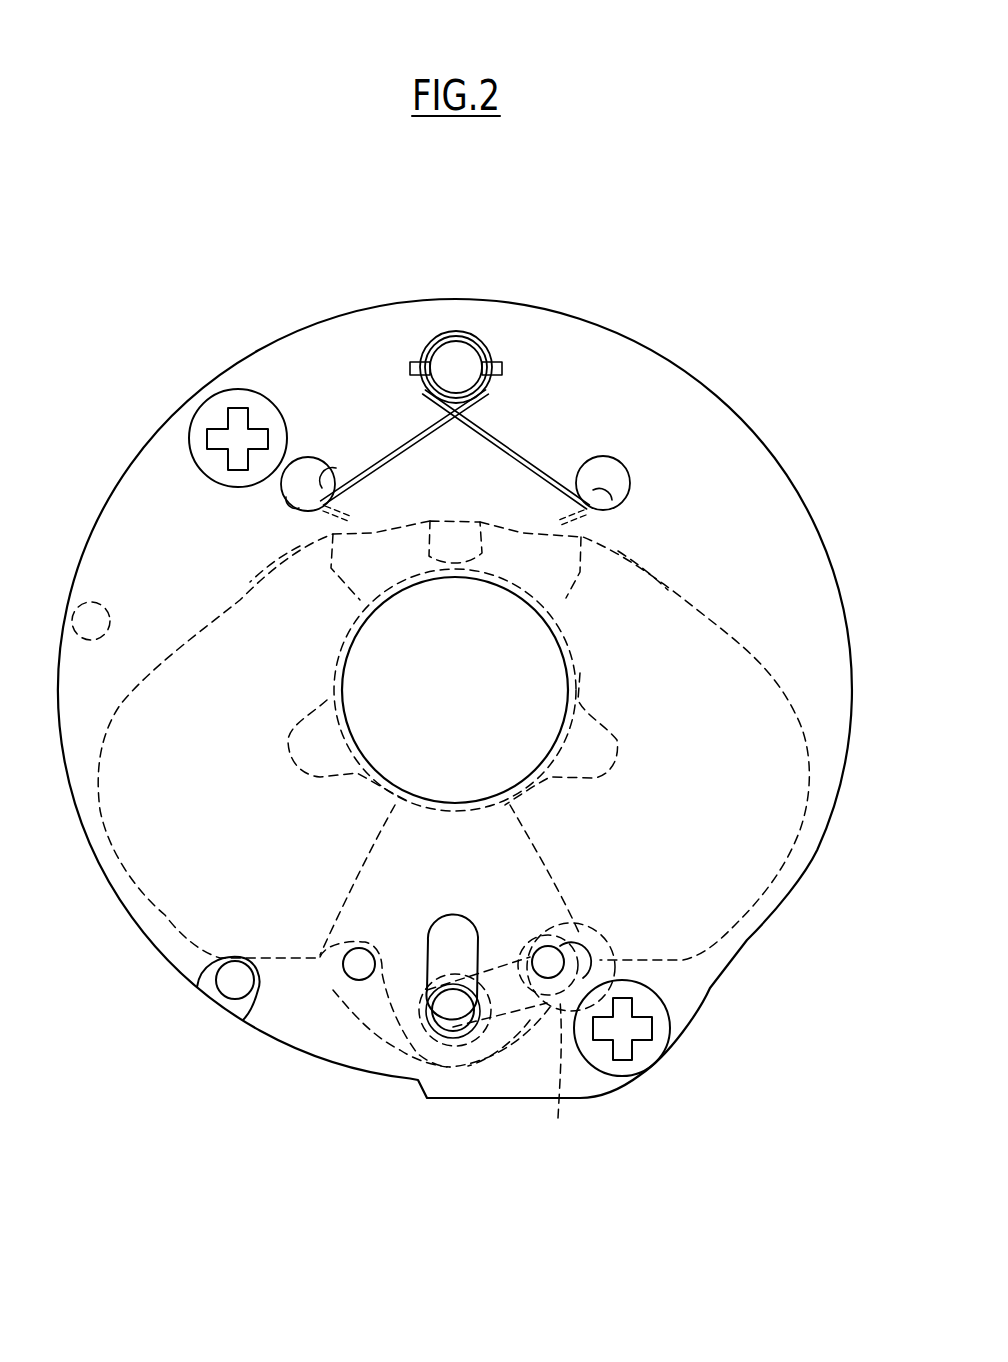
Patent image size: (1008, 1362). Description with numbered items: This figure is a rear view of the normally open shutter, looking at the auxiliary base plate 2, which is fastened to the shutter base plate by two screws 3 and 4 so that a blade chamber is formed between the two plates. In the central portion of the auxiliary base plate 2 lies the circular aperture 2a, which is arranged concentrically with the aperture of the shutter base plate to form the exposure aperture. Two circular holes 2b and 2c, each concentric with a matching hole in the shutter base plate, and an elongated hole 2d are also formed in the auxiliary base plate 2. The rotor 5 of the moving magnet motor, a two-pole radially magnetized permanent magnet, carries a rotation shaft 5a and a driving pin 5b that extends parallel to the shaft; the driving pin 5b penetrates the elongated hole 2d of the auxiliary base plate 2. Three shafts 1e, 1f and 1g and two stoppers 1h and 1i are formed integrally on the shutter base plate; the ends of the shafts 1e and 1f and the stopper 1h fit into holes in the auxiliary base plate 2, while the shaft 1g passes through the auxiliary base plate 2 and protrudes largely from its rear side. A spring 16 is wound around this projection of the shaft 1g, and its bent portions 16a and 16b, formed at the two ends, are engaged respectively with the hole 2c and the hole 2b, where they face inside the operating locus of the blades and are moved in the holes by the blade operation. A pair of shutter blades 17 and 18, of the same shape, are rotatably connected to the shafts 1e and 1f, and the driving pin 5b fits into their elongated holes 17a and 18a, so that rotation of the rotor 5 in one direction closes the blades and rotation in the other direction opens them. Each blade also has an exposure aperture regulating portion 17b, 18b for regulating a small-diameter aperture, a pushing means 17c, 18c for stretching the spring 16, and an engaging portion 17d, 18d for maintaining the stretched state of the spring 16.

The auxiliary base plate 2 is at (607, 345).
The circular aperture 2a is at (552, 648).
The circular hole 2b is at (608, 467).
The circular hole 2c is at (287, 497).
The elongated hole 2d is at (452, 915).
The screw 3 is at (252, 402).
The screw 4 is at (650, 1057).
The rotor 5 is at (600, 947).
The rotation shaft 5a is at (557, 1076).
The driving pin 5b is at (450, 1020).
The spring 16 is at (436, 332).
The bent portion 16a is at (330, 473).
The bent portion 16b is at (628, 500).
The shaft 1e is at (355, 971).
The shaft 1f is at (548, 962).
The shaft 1g is at (463, 351).
The stopper 1h is at (227, 987).
The stopper 1i is at (87, 617).
The shutter blade 17 is at (763, 693).
The elongated hole 17a is at (438, 984).
The exposure aperture regulating portion 17b is at (613, 752).
The pushing means 17c is at (594, 569).
The engaging portion 17d is at (660, 573).
The shutter blade 18 is at (122, 718).
The elongated hole 18a is at (500, 977).
The exposure aperture regulating portion 18b is at (293, 747).
The pushing means 18c is at (349, 567).
The engaging portion 18d is at (273, 552).